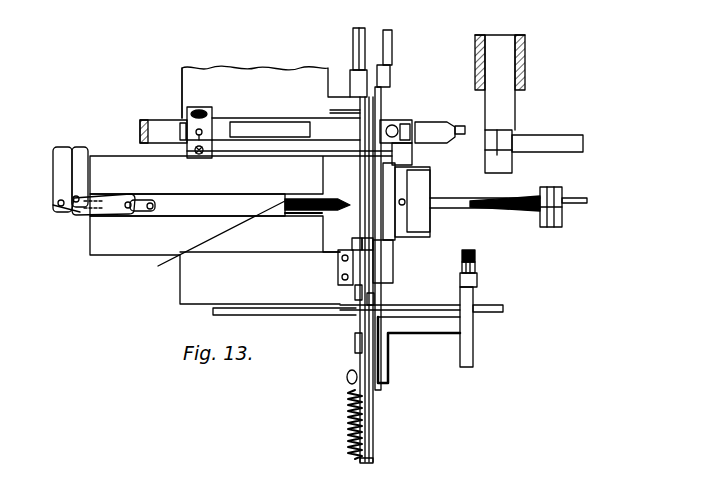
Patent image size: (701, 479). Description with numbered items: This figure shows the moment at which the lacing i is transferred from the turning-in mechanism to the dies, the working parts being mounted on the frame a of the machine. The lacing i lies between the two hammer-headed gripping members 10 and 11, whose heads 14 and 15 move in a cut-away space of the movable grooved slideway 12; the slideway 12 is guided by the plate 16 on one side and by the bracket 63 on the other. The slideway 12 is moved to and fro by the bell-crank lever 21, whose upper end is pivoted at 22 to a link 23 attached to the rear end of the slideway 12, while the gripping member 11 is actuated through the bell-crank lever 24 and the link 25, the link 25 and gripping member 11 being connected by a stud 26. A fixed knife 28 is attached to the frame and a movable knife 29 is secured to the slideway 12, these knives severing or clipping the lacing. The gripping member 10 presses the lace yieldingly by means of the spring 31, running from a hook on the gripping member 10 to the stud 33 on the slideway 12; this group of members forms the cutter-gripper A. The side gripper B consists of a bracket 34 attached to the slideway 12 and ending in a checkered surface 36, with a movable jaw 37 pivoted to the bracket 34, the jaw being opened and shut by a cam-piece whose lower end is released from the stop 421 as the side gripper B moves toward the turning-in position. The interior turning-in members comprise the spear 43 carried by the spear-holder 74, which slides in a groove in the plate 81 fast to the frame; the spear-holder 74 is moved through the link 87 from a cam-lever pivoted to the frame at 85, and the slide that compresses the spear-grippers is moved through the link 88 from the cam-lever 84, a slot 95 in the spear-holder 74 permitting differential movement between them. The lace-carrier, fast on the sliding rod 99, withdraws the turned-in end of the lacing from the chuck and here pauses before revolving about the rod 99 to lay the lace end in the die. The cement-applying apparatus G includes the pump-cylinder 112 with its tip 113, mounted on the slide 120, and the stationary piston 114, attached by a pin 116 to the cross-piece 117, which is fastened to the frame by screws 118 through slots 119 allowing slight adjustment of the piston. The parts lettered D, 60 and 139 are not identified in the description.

The pivot 85 is at (61, 151).
The cam-lever 84 is at (82, 150).
The plate 81 is at (129, 163).
The link 87 is at (78, 209).
The link 88 is at (117, 206).
The slot 95 is at (150, 208).
The slide 120 is at (160, 145).
The pin 116 is at (188, 150).
The screws 118 is at (195, 111).
The slots 119 is at (190, 117).
The cross-piece 117 is at (211, 110).
The piston 114 is at (258, 135).
The frame a is at (280, 80).
The spear-holder 74 is at (238, 140).
The spear 43 is at (310, 184).
The feed line D is at (208, 242).
The fixed knife 28 is at (303, 253).
The head 14 is at (341, 275).
The gripping member 10 is at (358, 290).
The slideway 12 is at (380, 303).
The gripping member 11 is at (364, 242).
The head 15 is at (371, 247).
The bracket 63 is at (386, 278).
The plate 16 is at (346, 182).
The pivot 22 is at (352, 86).
The bell-crank lever 21 is at (359, 36).
The link 23 is at (357, 112).
The bell-crank lever 24 is at (394, 44).
The stud 26 is at (392, 76).
The link 25 is at (381, 111).
The cement-applying apparatus G is at (398, 122).
The pump-cylinder 112 is at (413, 143).
The tip 113 is at (468, 129).
The arm 139 is at (494, 145).
The spindle housing 60 is at (433, 200).
The sliding rod 99 is at (514, 193).
The lacing i is at (576, 199).
The movable jaw 37 is at (474, 255).
The checkered surface 36 is at (474, 270).
The side gripper B is at (468, 292).
The stop 421 is at (487, 313).
The bracket 34 is at (430, 326).
The cutter-gripper A is at (355, 311).
The movable knife 29 is at (357, 339).
The stud 33 is at (349, 379).
The spring 31 is at (350, 430).